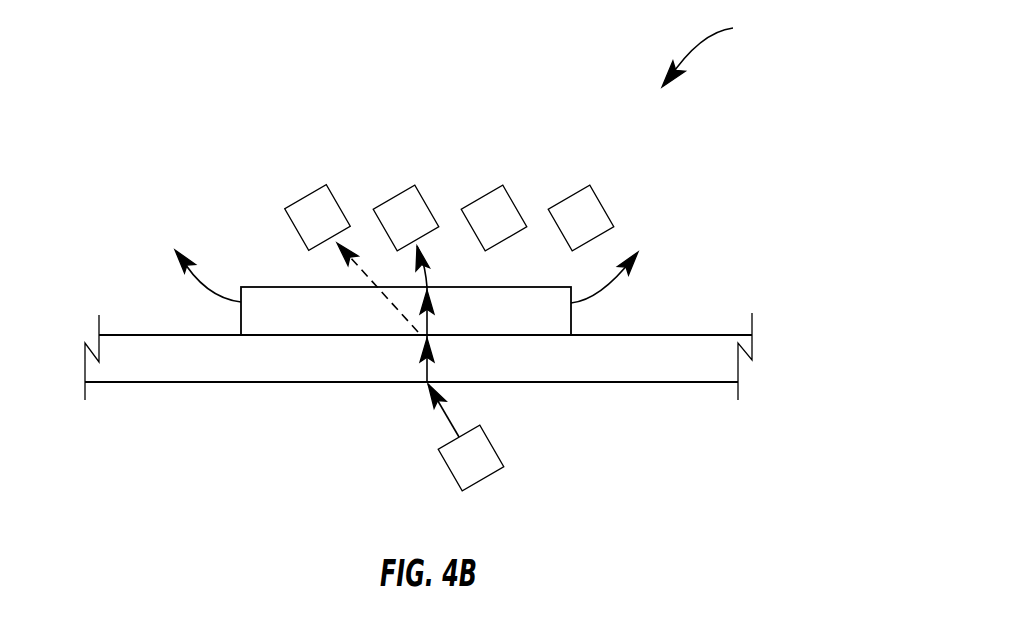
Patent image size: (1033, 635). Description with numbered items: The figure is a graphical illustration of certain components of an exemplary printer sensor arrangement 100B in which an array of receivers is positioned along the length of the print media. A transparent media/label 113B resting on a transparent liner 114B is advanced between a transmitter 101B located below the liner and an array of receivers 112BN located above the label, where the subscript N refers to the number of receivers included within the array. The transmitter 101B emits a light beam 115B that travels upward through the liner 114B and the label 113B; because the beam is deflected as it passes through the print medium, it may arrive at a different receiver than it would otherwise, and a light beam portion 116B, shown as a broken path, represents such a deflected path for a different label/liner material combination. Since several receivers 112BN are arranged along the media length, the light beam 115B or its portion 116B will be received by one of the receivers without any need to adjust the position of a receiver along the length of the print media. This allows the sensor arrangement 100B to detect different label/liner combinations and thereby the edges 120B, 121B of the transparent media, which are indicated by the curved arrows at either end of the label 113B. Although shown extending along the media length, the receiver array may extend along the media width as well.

The sensor arrangement 100B is at (723, 52).
The transmitter 101B is at (485, 480).
The array of receivers 112BN is at (650, 162).
The transparent media/label 113B is at (557, 326).
The transparent liner 114B is at (722, 374).
The light beam 115B is at (445, 420).
The light beam portion 116B is at (388, 297).
The edge of the transparent media 120B is at (195, 257).
The edge of the transparent media 121B is at (621, 260).